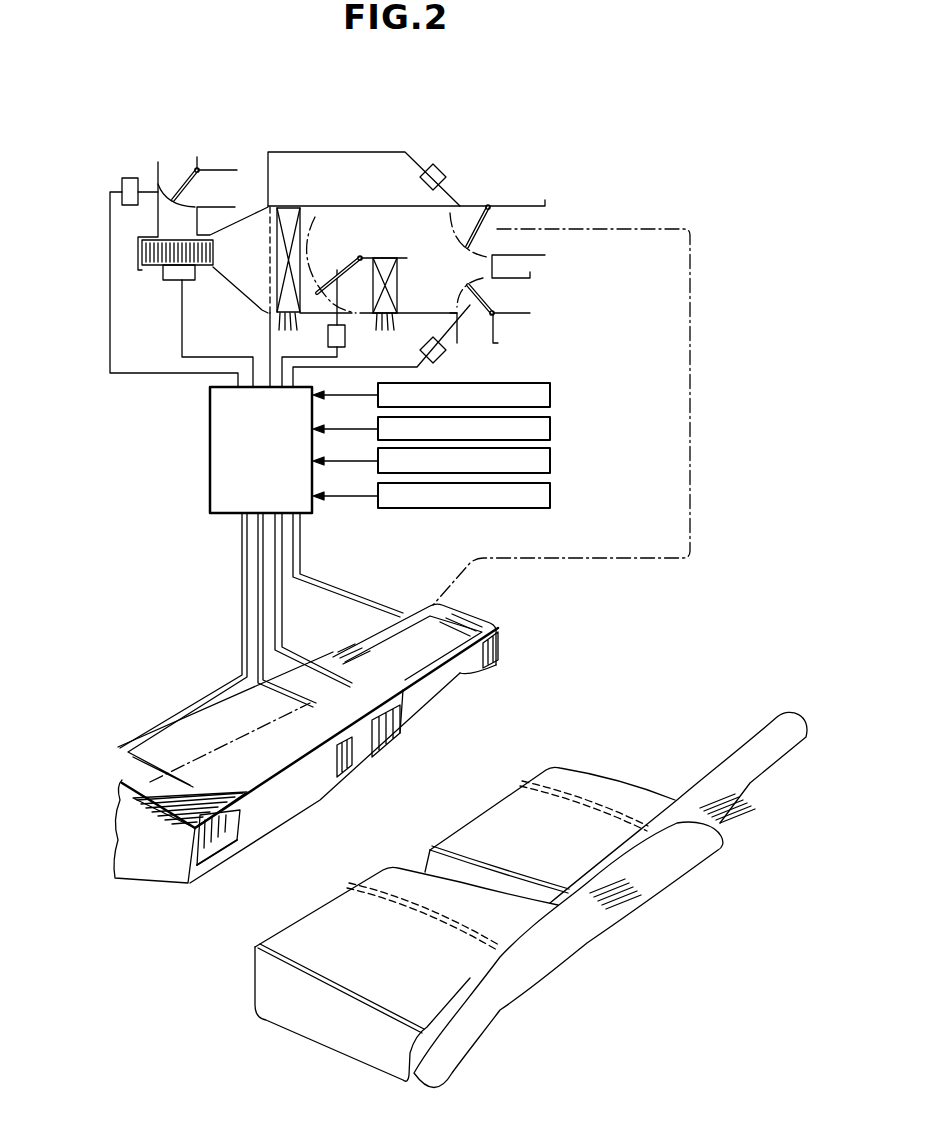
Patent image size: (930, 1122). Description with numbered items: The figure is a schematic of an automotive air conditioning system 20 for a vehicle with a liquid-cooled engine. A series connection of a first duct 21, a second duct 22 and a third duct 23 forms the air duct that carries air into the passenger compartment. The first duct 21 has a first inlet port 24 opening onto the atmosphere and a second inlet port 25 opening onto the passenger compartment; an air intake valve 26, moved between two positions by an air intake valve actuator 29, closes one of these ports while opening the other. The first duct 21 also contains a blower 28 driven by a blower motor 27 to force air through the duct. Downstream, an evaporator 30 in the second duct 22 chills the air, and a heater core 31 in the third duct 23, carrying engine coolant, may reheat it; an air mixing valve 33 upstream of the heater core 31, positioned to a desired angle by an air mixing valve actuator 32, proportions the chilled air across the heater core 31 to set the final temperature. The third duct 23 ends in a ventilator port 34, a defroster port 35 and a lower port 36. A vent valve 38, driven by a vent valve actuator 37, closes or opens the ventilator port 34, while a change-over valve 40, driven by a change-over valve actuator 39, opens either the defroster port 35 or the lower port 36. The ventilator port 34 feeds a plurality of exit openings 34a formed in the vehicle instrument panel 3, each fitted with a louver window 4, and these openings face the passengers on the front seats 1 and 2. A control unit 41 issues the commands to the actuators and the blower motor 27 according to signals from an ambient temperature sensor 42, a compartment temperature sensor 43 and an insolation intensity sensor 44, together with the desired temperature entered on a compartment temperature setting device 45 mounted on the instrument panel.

The front seat 1 is at (600, 783).
The front seat 2 is at (395, 882).
The floor console 3 is at (472, 617).
The louver window 4 is at (218, 845).
The air conditioning unit 20 is at (481, 201).
The first duct 21 is at (157, 222).
The second duct 22 is at (327, 206).
The third duct 23 is at (373, 206).
The first inlet port 24 is at (187, 158).
The second inlet port 25 is at (237, 190).
The air intake valve 26 is at (177, 198).
The blower motor 27 is at (167, 280).
The blower 28 is at (142, 257).
The air intake valve actuator 29 is at (122, 178).
The evaporator 30 is at (290, 216).
The heater core 31 is at (397, 283).
The air mixing valve actuator 32 is at (345, 338).
The air mixing valve 33 is at (343, 258).
The ventilator port 34 is at (537, 218).
The exit openings 34a is at (207, 850).
The defroster port 35 is at (527, 298).
The lower port 36 is at (478, 340).
The vent valve actuator 37 is at (430, 165).
The vent valve 38 is at (490, 207).
The change-over valve actuator 39 is at (446, 355).
The change-over valve 40 is at (495, 303).
The control unit 41 is at (210, 404).
The ambient temperature sensor 42 is at (551, 390).
The compartment temperature sensor 43 is at (551, 425).
The insolation intensity sensor 44 is at (551, 458).
The compartment temperature setting device 45 is at (551, 493).